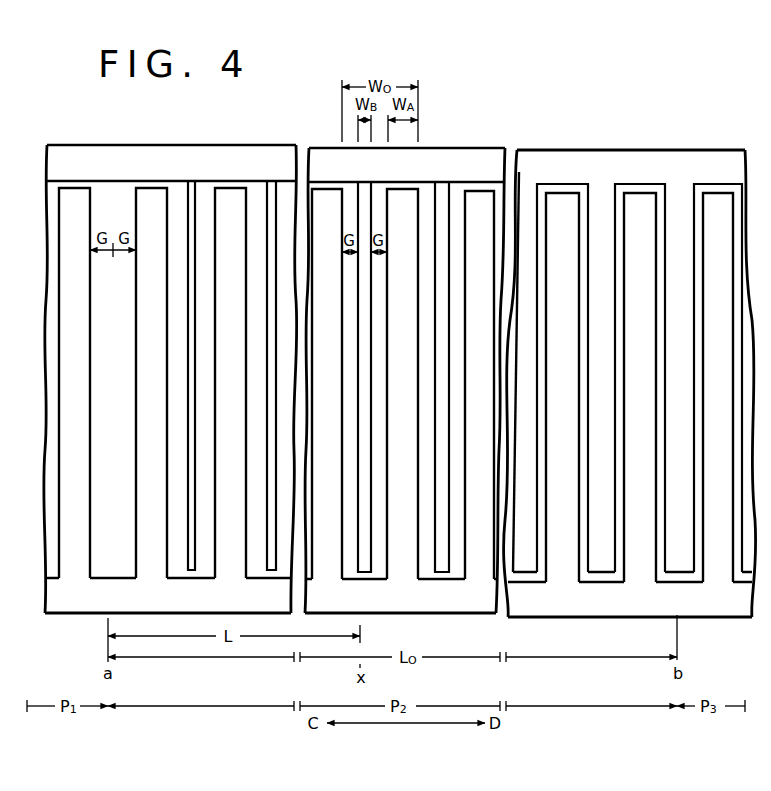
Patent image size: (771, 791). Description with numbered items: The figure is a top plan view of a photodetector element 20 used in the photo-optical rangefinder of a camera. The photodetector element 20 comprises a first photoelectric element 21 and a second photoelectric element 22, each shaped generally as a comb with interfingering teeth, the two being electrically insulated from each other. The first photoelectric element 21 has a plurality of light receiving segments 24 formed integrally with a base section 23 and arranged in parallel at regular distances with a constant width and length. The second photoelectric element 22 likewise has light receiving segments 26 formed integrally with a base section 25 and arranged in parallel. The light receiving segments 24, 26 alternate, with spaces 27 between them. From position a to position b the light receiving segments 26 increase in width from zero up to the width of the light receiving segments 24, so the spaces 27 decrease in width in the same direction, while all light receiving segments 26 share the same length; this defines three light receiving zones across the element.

The photodetector element 20 is at (669, 137).
The first photoelectric element 21 is at (743, 621).
The second photoelectric element 22 is at (731, 149).
The base section 23 is at (558, 607).
The light receiving segments 24 is at (726, 389).
The base section 25 is at (601, 160).
The light receiving segments 26 is at (465, 376).
The spaces 27 is at (394, 456).